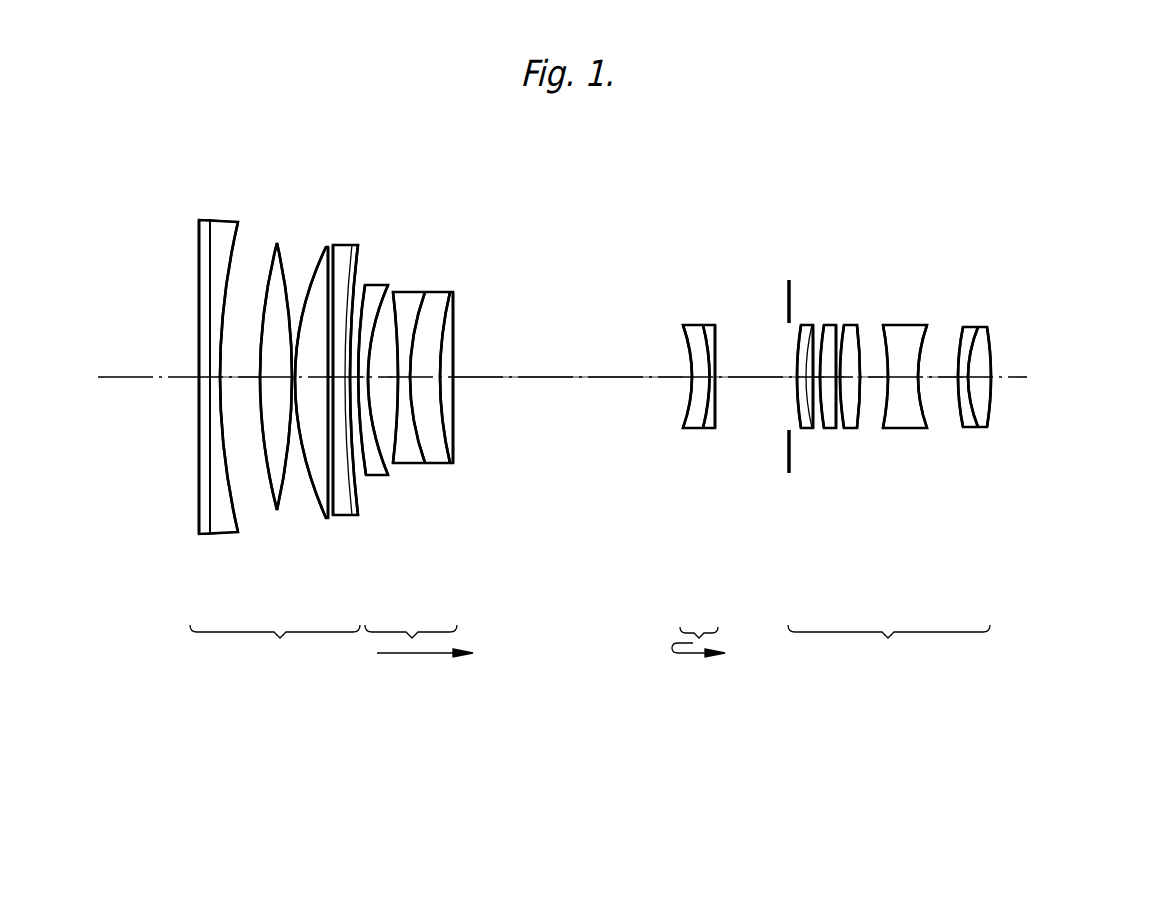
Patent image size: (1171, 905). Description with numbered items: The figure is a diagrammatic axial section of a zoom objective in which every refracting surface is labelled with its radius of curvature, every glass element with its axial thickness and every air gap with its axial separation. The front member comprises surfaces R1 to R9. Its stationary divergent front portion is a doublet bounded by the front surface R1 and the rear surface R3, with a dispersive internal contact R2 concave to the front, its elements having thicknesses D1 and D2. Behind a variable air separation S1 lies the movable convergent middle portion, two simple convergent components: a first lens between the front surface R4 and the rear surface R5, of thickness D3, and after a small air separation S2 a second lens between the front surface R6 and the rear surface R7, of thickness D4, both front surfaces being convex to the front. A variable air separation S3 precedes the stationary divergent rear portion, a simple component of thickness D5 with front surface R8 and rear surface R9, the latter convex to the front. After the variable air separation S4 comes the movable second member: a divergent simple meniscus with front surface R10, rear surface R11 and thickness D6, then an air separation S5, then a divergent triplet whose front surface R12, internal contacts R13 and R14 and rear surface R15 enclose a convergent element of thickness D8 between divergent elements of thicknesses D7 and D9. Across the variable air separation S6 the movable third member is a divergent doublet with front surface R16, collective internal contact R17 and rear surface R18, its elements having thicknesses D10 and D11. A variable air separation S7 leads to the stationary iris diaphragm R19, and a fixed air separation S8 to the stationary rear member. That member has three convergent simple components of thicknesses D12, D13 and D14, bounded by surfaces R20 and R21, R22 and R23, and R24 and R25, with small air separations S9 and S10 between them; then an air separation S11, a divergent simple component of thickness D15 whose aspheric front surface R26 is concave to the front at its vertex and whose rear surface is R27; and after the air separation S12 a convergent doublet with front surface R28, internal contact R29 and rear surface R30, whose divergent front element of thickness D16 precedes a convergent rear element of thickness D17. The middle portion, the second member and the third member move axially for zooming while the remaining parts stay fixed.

The front surface radius of curvature R1 is at (199, 359).
The dispersive internal contact R2 is at (209, 322).
The rear surface of front portion R3 is at (227, 296).
The front surface of middle-portion front component R4 is at (285, 290).
The rear surface of middle-portion front component R5 is at (268, 288).
The front surface of middle-portion rear component R6 is at (310, 292).
The rear surface of middle-portion rear component R7 is at (330, 377).
The front surface of rear portion of front member R8 is at (338, 377).
The rear surface of rear portion of front member R9 is at (357, 270).
The front surface of meniscus component R10 is at (365, 284).
The rear surface of meniscus component R11 is at (389, 300).
The front surface of triplet component R12 is at (398, 328).
The first internal contact of triplet R13 is at (413, 345).
The second internal contact of triplet R14 is at (450, 372).
The rear surface of triplet component R15 is at (453, 380).
The front surface of third-member doublet R16 is at (683, 327).
The collective internal contact R17 is at (700, 327).
The rear surface of third-member doublet R18 is at (706, 327).
The iris diaphragm R19 is at (789, 308).
The front surface of first rear-member component R20 is at (798, 327).
The rear surface of first rear-member component R21 is at (815, 327).
The front surface of second rear-member component R22 is at (831, 327).
The rear surface of second rear-member component R23 is at (845, 327).
The front surface of third rear-member component R24 is at (860, 327).
The rear surface of third rear-member component R25 is at (884, 327).
The aspheric front surface of divergent component R26 is at (926, 327).
The rear surface of divergent component R27 is at (955, 327).
The front surface of rear doublet R28 is at (975, 350).
The internal contact of rear doublet R29 is at (988, 348).
The rear surface of rear doublet R30 is at (990, 365).
The axial thickness of front element D1 is at (205, 383).
The axial thickness of front-doublet rear element D2 is at (216, 386).
The axial thickness of middle-portion front component D3 is at (290, 390).
The axial thickness of middle-portion rear component D4 is at (318, 442).
The axial thickness of rear-portion component D5 is at (331, 425).
The axial thickness of meniscus component D6 is at (347, 430).
The axial thickness of triplet front element D7 is at (372, 445).
The axial thickness of triplet middle element D8 is at (425, 470).
The axial thickness of triplet rear element D9 is at (445, 462).
The axial thickness of third-member front element D10 is at (703, 430).
The axial thickness of third-member rear element D11 is at (723, 430).
The axial thickness of first rear-member component D12 is at (833, 430).
The axial thickness of second rear-member component D13 is at (870, 430).
The axial thickness of third rear-member component D14 is at (925, 432).
The axial thickness of divergent component D15 is at (988, 420).
The axial thickness of rear-doublet front element D16 is at (988, 393).
The axial thickness of rear-doublet rear element D17 is at (990, 382).
The variable air separation S1 is at (242, 391).
The air separation S2 is at (302, 448).
The variable air separation S3 is at (310, 490).
The variable air separation S4 is at (385, 500).
The air separation S5 is at (455, 470).
The variable air separation S6 is at (603, 382).
The variable air separation S7 is at (758, 430).
The air separation S8 is at (795, 378).
The air separation S9 is at (807, 430).
The air separation S10 is at (850, 430).
The air separation S11 is at (880, 428).
The air separation S12 is at (988, 407).